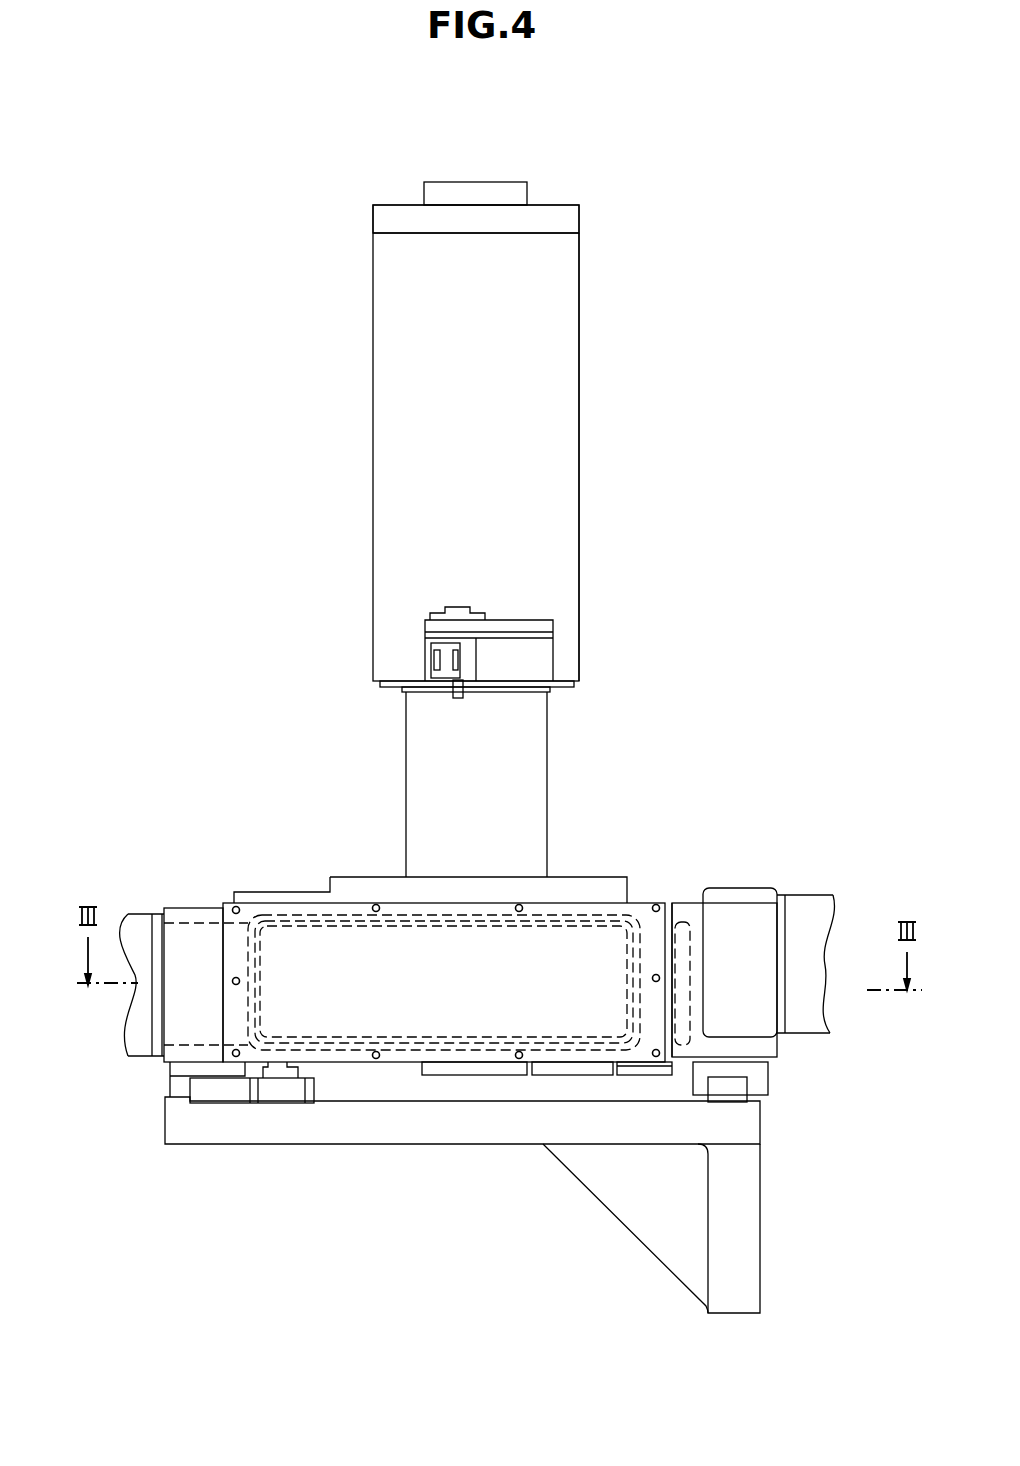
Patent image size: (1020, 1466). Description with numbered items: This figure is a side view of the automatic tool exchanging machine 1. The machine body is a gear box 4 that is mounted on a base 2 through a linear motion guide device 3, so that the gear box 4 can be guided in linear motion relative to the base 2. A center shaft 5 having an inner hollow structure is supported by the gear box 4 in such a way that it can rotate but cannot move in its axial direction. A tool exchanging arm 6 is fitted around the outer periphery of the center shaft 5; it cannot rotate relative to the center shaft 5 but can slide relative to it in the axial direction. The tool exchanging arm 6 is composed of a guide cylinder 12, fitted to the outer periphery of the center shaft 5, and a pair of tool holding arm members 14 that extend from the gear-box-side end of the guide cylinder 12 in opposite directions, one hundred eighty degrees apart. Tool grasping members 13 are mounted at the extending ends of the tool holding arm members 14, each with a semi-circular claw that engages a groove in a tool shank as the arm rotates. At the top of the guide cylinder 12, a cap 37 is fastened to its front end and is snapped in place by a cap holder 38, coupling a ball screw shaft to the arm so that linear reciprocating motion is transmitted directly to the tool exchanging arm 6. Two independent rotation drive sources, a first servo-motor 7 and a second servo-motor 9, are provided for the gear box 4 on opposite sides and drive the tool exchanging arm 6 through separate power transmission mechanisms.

The automatic tool exchanging machine 1 is at (195, 907).
The base 2 is at (424, 1120).
The linear motion guide device 3 is at (168, 1090).
The gear box 4 is at (662, 903).
The center shaft 5 is at (407, 787).
The tool exchanging arm 6 is at (372, 530).
The first servo-motor 7 is at (138, 912).
The second servo-motor 9 is at (807, 895).
The guide cylinder 12 is at (569, 494).
The tool grasping member 13 is at (477, 660).
The tool holding arm member 14 is at (553, 622).
The cap 37 is at (579, 216).
The cap holder 38 is at (424, 192).